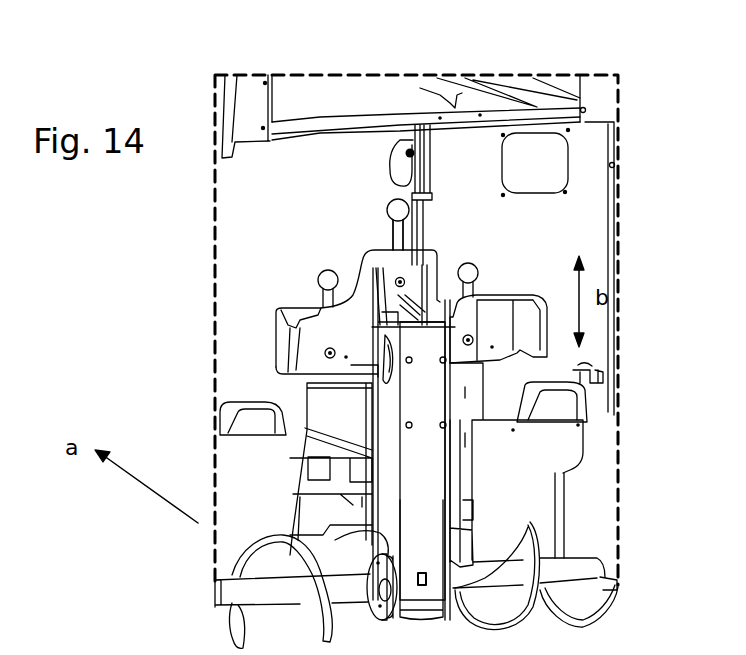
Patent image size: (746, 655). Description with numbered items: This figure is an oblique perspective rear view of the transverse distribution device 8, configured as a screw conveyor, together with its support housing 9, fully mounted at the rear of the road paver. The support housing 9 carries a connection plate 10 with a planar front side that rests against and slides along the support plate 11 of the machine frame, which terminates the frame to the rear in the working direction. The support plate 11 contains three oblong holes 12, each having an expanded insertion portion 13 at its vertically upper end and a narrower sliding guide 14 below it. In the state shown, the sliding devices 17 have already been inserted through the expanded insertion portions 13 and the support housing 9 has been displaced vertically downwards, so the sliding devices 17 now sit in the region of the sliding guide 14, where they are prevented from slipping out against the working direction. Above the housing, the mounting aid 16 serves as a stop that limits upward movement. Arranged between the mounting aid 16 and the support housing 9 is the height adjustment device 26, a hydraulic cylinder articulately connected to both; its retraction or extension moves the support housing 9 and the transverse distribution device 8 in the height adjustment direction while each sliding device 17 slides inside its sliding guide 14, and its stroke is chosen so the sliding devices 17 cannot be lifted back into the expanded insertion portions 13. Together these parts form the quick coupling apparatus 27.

The transverse distribution device 8 is at (258, 590).
The support housing 9 is at (430, 467).
The connection plate 10 is at (480, 318).
The support plate 11 is at (277, 222).
The oblong hole 12 is at (302, 287).
The expanded insertion portion 13 is at (397, 201).
The sliding guide 14 is at (393, 222).
The mounting aid 16 is at (411, 150).
The sliding device 17 is at (324, 354).
The height adjustment device 26 is at (420, 227).
The quick coupling apparatus 27 is at (548, 355).